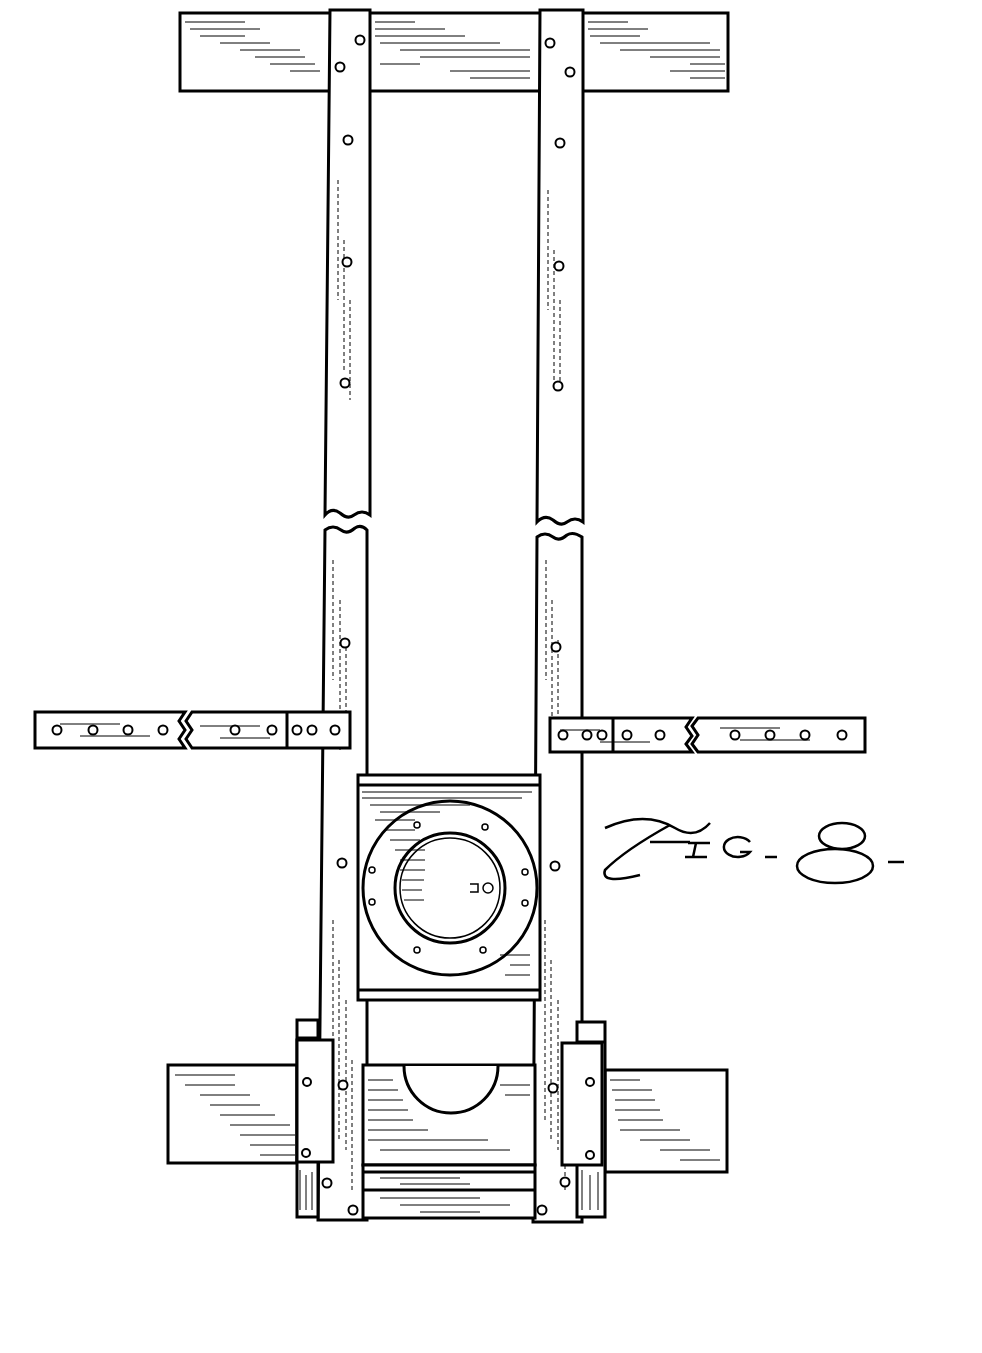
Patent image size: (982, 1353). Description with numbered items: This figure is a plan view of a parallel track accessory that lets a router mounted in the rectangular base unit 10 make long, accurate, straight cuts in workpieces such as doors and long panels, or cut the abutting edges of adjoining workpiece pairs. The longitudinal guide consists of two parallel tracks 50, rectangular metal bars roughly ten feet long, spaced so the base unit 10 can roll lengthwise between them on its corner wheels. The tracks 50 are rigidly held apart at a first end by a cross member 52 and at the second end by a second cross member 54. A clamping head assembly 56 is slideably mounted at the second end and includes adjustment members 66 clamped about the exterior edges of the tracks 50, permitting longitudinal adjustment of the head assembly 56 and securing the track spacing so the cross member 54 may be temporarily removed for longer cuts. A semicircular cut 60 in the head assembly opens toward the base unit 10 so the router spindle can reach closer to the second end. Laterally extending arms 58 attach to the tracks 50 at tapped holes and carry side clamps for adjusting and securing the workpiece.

The rectangular base unit 10 is at (428, 776).
The parallel tracks 50 is at (328, 215).
The cross member 52 is at (645, 93).
The second cross member 54 is at (455, 1210).
The clamping head assembly 56 is at (283, 1020).
The laterally extending arms 58 is at (115, 712).
The semicircular cut 60 is at (414, 1090).
The adjustment members 66 is at (304, 1054).